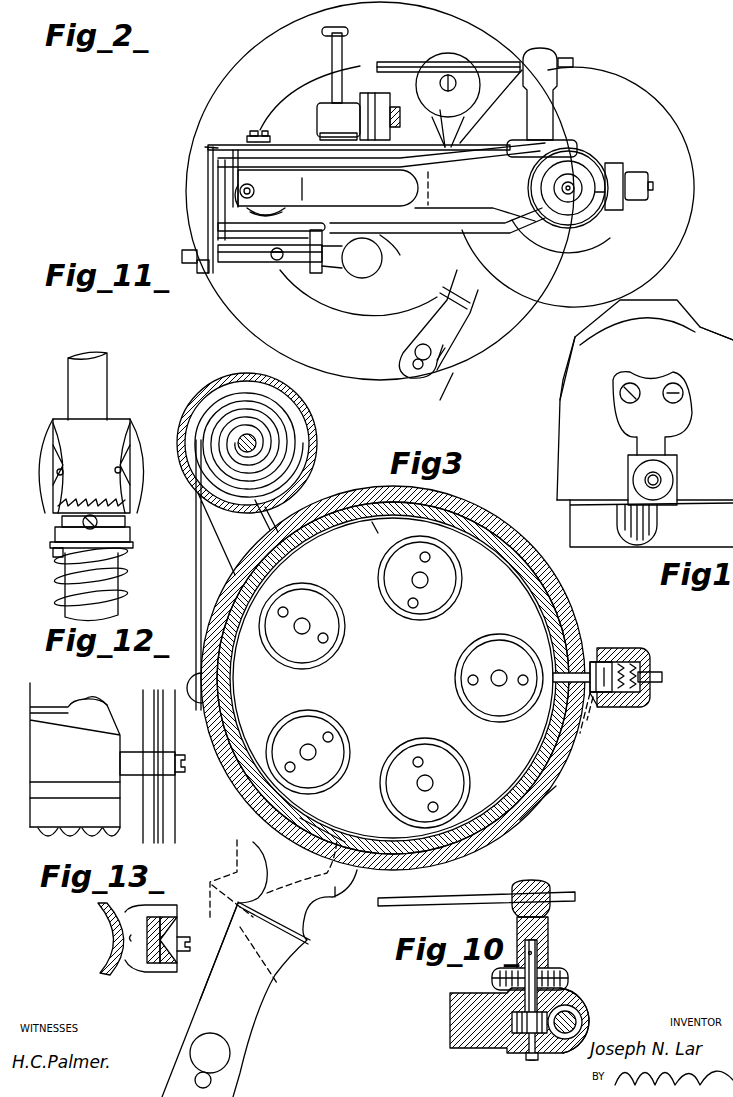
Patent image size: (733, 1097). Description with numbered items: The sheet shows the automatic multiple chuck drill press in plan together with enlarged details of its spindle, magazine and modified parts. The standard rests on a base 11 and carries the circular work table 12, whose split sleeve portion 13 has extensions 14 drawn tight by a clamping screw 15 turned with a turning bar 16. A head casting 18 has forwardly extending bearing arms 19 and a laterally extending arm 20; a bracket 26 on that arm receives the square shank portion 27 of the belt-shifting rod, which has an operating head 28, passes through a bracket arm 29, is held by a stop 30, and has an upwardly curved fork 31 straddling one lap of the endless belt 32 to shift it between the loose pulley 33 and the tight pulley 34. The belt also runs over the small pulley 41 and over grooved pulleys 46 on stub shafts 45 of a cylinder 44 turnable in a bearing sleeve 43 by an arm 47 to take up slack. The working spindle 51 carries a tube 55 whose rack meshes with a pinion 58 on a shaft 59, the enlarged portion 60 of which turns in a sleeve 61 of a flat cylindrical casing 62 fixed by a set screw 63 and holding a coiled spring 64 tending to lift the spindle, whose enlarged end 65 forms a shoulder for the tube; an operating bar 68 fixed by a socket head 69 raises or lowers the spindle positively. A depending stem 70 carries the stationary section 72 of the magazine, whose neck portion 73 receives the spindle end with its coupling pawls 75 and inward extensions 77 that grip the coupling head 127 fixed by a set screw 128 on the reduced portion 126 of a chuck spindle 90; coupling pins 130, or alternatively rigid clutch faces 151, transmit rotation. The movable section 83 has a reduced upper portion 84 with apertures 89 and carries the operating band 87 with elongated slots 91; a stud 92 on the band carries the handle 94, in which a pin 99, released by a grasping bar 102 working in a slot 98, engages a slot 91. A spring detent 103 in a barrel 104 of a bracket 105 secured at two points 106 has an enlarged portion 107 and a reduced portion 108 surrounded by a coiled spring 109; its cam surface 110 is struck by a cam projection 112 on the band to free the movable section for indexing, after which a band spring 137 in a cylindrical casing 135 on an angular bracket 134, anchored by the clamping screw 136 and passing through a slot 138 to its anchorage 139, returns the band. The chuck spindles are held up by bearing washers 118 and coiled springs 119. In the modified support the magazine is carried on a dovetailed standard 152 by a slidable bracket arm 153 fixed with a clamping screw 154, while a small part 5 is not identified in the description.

In FIG. 2, the bracket 5 is at (441, 128).
In FIG. 2, the base 11 is at (497, 313).
In FIG. 2, the work support or table 12 is at (655, 122).
In FIG. 2, the split sleeve portion 13 is at (392, 238).
In FIG. 2, the extensions 14 is at (372, 100).
In FIG. 2, the clamping screw 15 is at (364, 116).
In FIG. 2, the turning bar 16 is at (334, 52).
In FIG. 2, the head casting 18 is at (333, 188).
In FIG. 2, the bearing arms 19 is at (369, 193).
In FIG. 12, the bearing arms 19 is at (48, 707).
In FIG. 10, the bearing arms 19 is at (460, 1012).
In FIG. 2, the depending and laterally extending arm 20 is at (205, 160).
In FIG. 2, the bracket 26 is at (317, 262).
In FIG. 2, the square shank portion 27 is at (185, 264).
In FIG. 2, the operating head 28 is at (358, 265).
In FIG. 2, the bracket arm 29 is at (212, 222).
In FIG. 2, the set screw or stop 30 is at (273, 260).
In FIG. 2, the upwardly curved fork 31 is at (230, 249).
In FIG. 2, the endless drive member or belt 32 is at (518, 247).
In FIG. 2, the loose pulley 33 is at (210, 192).
In FIG. 2, the tight pulley 34 is at (240, 145).
In FIG. 2, the small pulley 41 is at (590, 193).
In FIG. 2, the bearing sleeve 43 is at (292, 192).
In FIG. 2, the cylinder 44 is at (250, 167).
In FIG. 2, the removable stub shafts 45 is at (268, 170).
In FIG. 2, the grooved pulley 46 is at (218, 145).
In FIG. 2, the rigid projection or arm 47 is at (577, 157).
In FIG. 2, the working spindle 51 is at (565, 200).
In FIG. 11, the working spindle 51 is at (88, 383).
In FIG. 10, the working spindle 51 is at (592, 1018).
In FIG. 10, the tube 55 is at (583, 1003).
In FIG. 10, the pinion 58 is at (542, 1033).
In FIG. 10, the shaft 59 is at (532, 1040).
In FIG. 10, the enlarged portion 60 is at (573, 988).
In FIG. 10, the sleeve 61 is at (502, 997).
In FIG. 2, the cylindrical casing 62 is at (542, 140).
In FIG. 10, the cylindrical casing 62 is at (567, 973).
In FIG. 10, the set screw 63 is at (520, 1030).
In FIG. 10, the coiled spring 64 is at (551, 960).
In FIG. 11, the enlarged lower end 65 is at (97, 473).
In FIG. 2, the operating bar 68 is at (568, 58).
In FIG. 10, the operating bar 68 is at (473, 893).
In FIG. 2, the socket head 69 is at (545, 115).
In FIG. 10, the socket head 69 is at (547, 903).
In FIG. 12, the depending stem 70 is at (97, 713).
In FIG. 2, the stationary section of magazine 72 is at (568, 250).
In FIG. 14, the stationary section of magazine 72 is at (568, 443).
In FIG. 12, the stationary section of magazine 72 is at (75, 779).
In FIG. 13, the stationary section of magazine 72 is at (117, 930).
In FIG. 14, the neck portion 73 is at (677, 305).
In FIG. 11, the coupling pawls 75 is at (40, 455).
In FIG. 11, the inward extensions 77 is at (125, 516).
In FIG. 12, the movable section of magazine 83 is at (110, 820).
In FIG. 3, the movable section of magazine 83 is at (565, 580).
In FIG. 3, the reduced upper portion 84 is at (500, 525).
In FIG. 12, the operating band 87 is at (82, 787).
In FIG. 3, the operating band 87 is at (556, 786).
In FIG. 3, the circular apertures 89 is at (440, 522).
In FIG. 3, the chuck spindles 90 is at (318, 607).
In FIG. 3, the elongated slots 91 is at (372, 522).
In FIG. 3, the apertured stud 92 is at (335, 887).
In FIG. 2, the operating handle 94 is at (440, 340).
In FIG. 3, the operating handle 94 is at (247, 990).
In FIG. 2, the vertical slot 98 is at (421, 368).
In FIG. 3, the pin 99 is at (325, 832).
In FIG. 2, the grasping bar 102 is at (432, 345).
In FIG. 3, the grasping bar 102 is at (213, 1048).
In FIG. 2, the spring detent 103 is at (650, 190).
In FIG. 14, the spring detent 103 is at (645, 480).
In FIG. 3, the spring detent 103 is at (580, 660).
In FIG. 2, the barrel 104 is at (633, 180).
In FIG. 14, the barrel 104 is at (668, 480).
In FIG. 3, the barrel 104 is at (652, 688).
In FIG. 2, the bracket 105 is at (616, 165).
In FIG. 14, the bracket 105 is at (732, 423).
In FIG. 14, the securing points 106 is at (667, 382).
In FIG. 3, the enlarged portion 107 is at (615, 655).
In FIG. 3, the reduced portion 108 is at (653, 650).
In FIG. 3, the coiled spring 109 is at (627, 707).
In FIG. 14, the cam surface 110 is at (627, 515).
In FIG. 3, the cam surface 110 is at (595, 700).
In FIG. 3, the cam projection 112 is at (595, 700).
In FIG. 3, the bearing plates or washers 118 is at (447, 603).
In FIG. 11, the coiled springs 119 is at (123, 603).
In FIG. 3, the circular reduced portion 126 is at (307, 748).
In FIG. 3, the coupling head 127 is at (396, 620).
In FIG. 11, the set screw 128 is at (100, 528).
In FIG. 3, the coupling pins 130 is at (418, 603).
In FIG. 2, the angular bracket 134 is at (428, 133).
In FIG. 3, the angular bracket 134 is at (250, 527).
In FIG. 2, the cylindrical casing 135 is at (447, 56).
In FIG. 3, the cylindrical casing 135 is at (312, 430).
In FIG. 2, the clamping screw 136 is at (462, 70).
In FIG. 2, the band spring 137 is at (423, 134).
In FIG. 3, the band spring 137 is at (218, 410).
In FIG. 3, the slot 138 is at (205, 503).
In FIG. 3, the anchorage 139 is at (195, 676).
In FIG. 11, the rigid clutch faces 151 is at (100, 503).
In FIG. 12, the standard 152 is at (162, 802).
In FIG. 13, the standard 152 is at (178, 927).
In FIG. 12, the bracket arm 153 is at (147, 763).
In FIG. 13, the bracket arm 153 is at (133, 957).
In FIG. 12, the clamping screw 154 is at (184, 758).
In FIG. 13, the clamping screw 154 is at (190, 945).